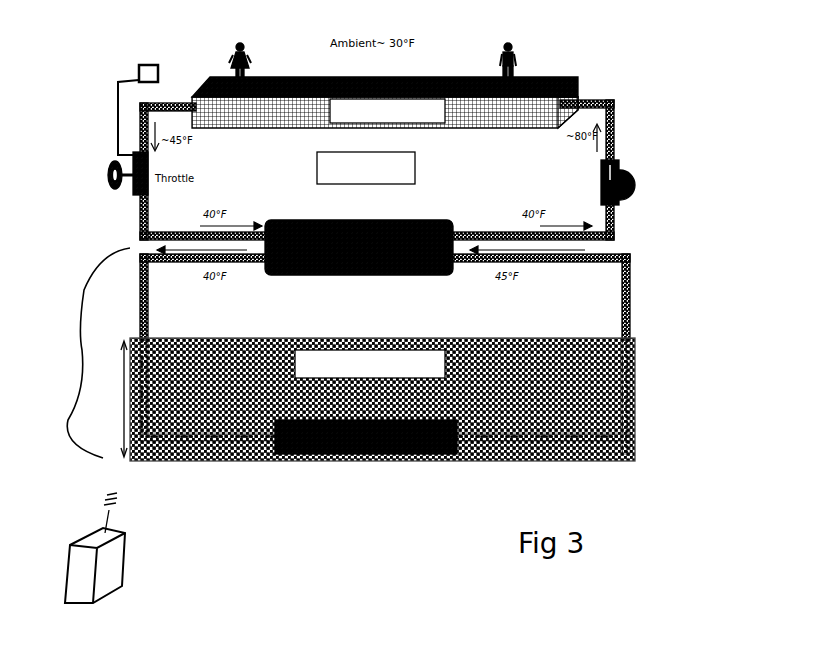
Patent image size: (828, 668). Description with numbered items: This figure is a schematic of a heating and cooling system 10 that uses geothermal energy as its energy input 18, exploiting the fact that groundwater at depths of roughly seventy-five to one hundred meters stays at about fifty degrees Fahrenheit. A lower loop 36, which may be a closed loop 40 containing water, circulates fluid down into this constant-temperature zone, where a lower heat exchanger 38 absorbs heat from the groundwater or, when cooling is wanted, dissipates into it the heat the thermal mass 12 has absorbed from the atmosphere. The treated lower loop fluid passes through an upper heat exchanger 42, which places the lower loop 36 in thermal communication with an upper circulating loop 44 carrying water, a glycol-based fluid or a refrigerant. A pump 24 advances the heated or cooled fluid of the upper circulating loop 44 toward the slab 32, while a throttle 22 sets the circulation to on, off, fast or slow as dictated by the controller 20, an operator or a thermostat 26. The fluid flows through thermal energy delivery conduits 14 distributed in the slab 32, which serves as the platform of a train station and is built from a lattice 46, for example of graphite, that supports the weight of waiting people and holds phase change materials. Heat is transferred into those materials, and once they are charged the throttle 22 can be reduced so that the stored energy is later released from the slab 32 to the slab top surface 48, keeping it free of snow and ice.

The heating and cooling system 10 is at (583, 69).
The thermal mass 12 is at (231, 64).
The thermal energy delivery conduit 14 is at (590, 102).
The energy input 18 is at (78, 352).
The controller 20 is at (116, 566).
The throttle 22 is at (120, 195).
The pump 24 is at (633, 190).
The thermostat 26 is at (147, 65).
The slab 32 is at (289, 112).
The lower loop 36 is at (650, 300).
The lower heat exchanger 38 is at (318, 453).
The closed loop 40 is at (625, 400).
The upper heat exchanger 42 is at (320, 277).
The upper circulating loop 44 is at (632, 119).
The lattice 46 is at (504, 108).
The slab top surface 48 is at (443, 78).